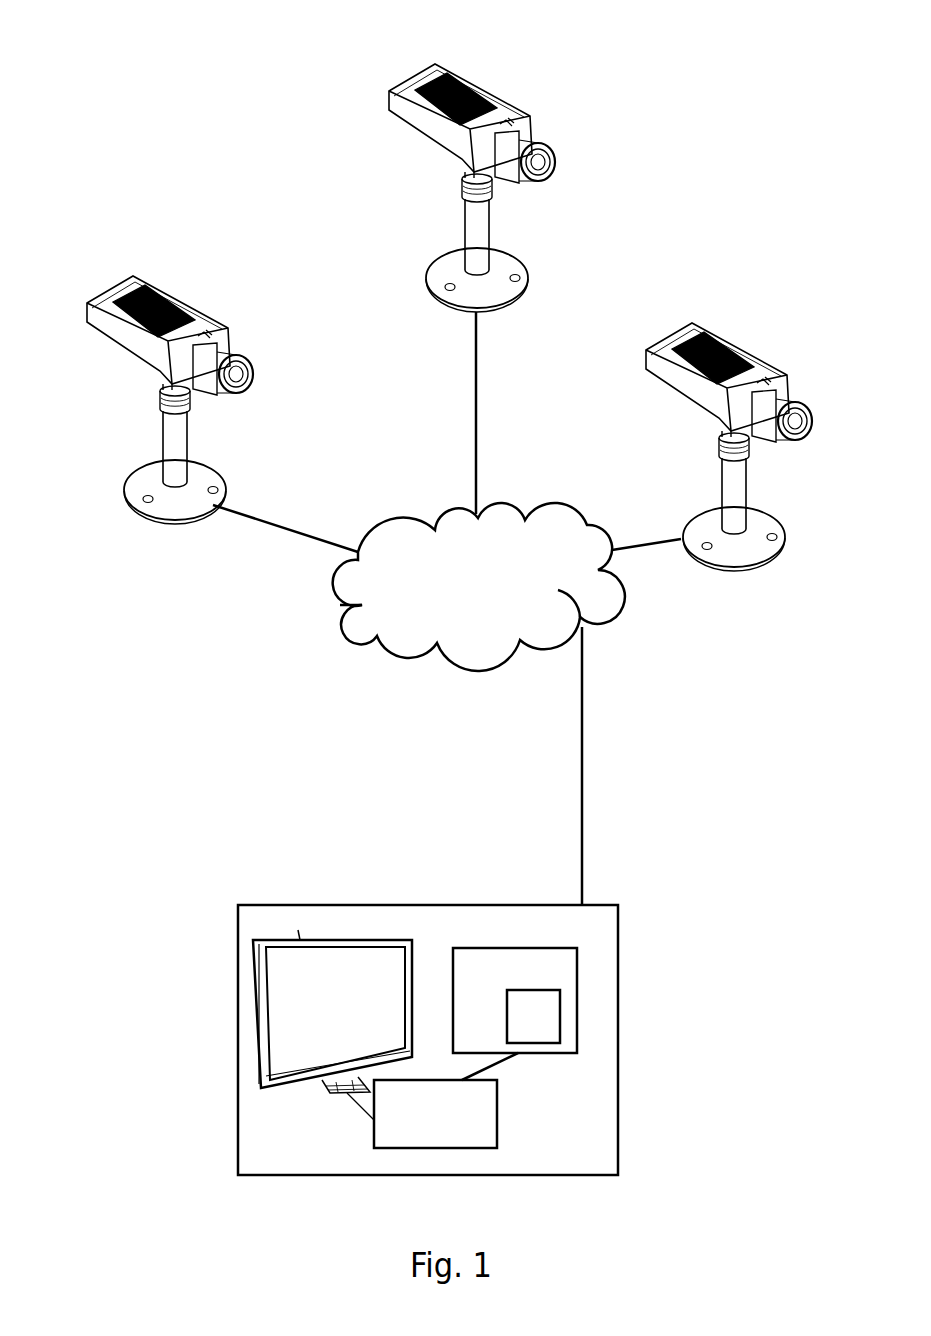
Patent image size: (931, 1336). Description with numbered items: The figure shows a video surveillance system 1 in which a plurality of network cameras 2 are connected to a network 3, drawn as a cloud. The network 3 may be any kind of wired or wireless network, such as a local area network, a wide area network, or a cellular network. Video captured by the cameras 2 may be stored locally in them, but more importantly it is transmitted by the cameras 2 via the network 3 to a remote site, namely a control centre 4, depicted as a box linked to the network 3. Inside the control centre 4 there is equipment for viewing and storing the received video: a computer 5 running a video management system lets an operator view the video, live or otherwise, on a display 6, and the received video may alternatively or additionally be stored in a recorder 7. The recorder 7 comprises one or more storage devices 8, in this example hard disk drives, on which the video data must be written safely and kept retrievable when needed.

The video surveillance system 1 is at (180, 72).
The network cameras 2 is at (110, 290).
The network 3 is at (353, 623).
The control centre 4 is at (618, 958).
The computer 5 is at (437, 1150).
The display 6 is at (253, 997).
The recorder 7 is at (577, 1005).
The storage devices 8 is at (563, 1017).